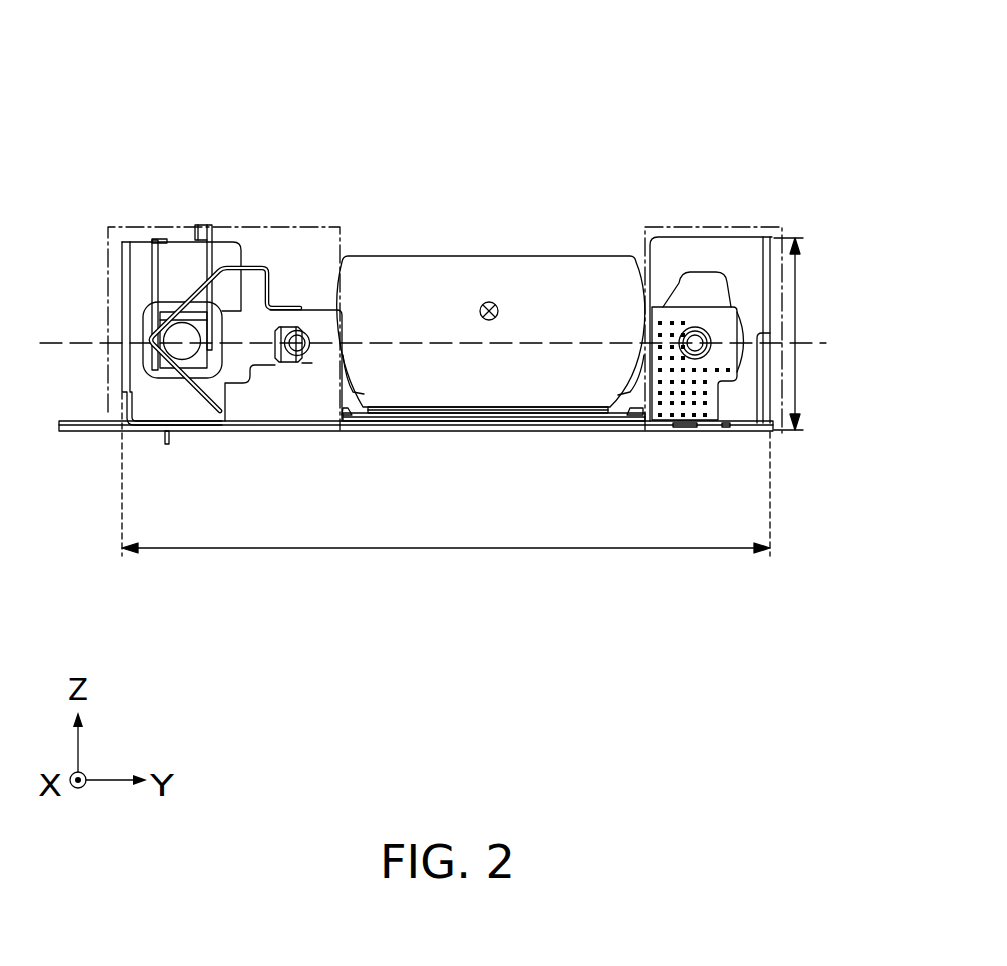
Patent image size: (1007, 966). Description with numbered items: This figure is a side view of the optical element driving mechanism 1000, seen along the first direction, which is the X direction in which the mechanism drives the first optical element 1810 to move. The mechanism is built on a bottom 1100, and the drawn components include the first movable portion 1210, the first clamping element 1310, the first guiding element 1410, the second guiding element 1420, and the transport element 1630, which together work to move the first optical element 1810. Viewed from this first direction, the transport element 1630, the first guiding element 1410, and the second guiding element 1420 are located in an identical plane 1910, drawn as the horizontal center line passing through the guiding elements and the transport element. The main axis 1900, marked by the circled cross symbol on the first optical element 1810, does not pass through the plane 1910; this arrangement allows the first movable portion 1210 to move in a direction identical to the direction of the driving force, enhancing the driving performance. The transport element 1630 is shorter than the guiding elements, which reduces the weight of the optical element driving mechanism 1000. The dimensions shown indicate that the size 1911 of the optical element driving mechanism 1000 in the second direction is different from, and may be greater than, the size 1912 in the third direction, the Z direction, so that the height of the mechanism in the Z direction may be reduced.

The optical element driving mechanism 1000 is at (127, 45).
The bottom 1100 is at (297, 227).
The first movable portion 1210 is at (182, 335).
The first clamping element 1310 is at (193, 390).
The first guiding element 1410 is at (697, 337).
The second guiding element 1420 is at (297, 332).
The transport element 1630 is at (233, 291).
The first optical element 1810 is at (592, 270).
The main axis 1900 is at (487, 302).
The plane 1910 is at (465, 346).
The size 1911 is at (446, 474).
The size 1912 is at (805, 285).